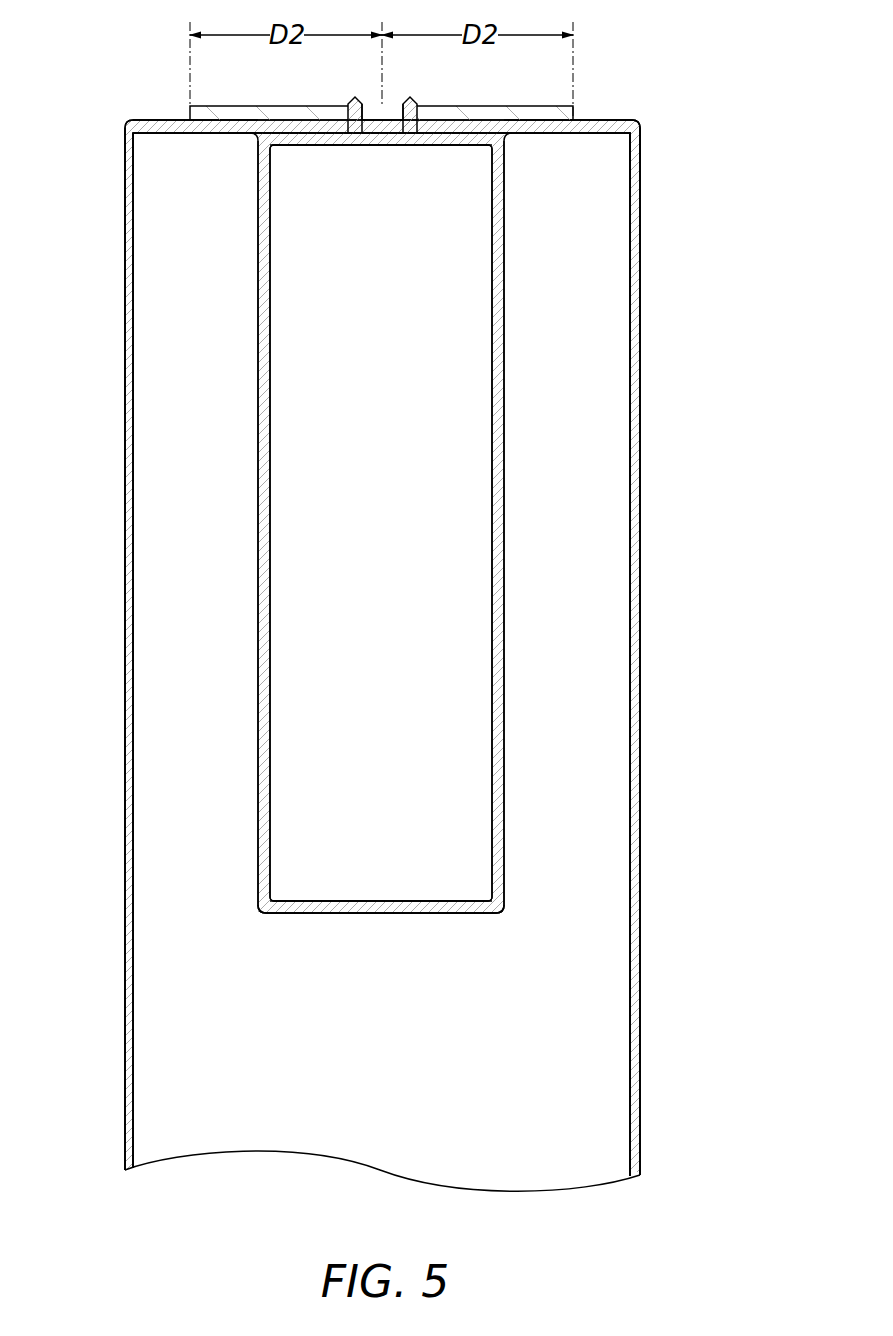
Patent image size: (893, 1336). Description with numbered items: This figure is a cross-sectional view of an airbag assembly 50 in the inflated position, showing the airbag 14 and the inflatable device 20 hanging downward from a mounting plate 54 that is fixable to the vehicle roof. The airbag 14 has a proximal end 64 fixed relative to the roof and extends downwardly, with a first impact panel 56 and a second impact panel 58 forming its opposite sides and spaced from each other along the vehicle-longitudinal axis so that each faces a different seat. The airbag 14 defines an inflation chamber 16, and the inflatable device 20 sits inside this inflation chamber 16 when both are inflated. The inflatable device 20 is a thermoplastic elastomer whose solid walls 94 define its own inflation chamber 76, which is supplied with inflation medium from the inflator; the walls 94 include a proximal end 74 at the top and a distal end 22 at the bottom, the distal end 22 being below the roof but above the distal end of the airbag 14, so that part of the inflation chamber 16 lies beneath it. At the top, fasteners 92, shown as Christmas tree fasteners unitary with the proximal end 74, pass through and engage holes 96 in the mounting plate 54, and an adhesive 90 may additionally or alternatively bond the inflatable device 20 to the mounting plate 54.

The airbag 14 is at (670, 277).
The inflation chamber 16 is at (570, 715).
The inflatable device 20 is at (520, 404).
The distal end 22 is at (390, 914).
The airbag assembly 50 is at (736, 137).
The mounting plate 54 is at (493, 107).
The first impact panel 56 is at (124, 444).
The second impact panel 58 is at (640, 436).
The proximal end 64 is at (203, 130).
The proximal end 74 is at (454, 146).
The inflation chamber 76 is at (436, 627).
The adhesive 90 is at (606, 120).
The fasteners 92 is at (353, 96).
The walls 94 is at (258, 322).
The holes 96 is at (402, 106).